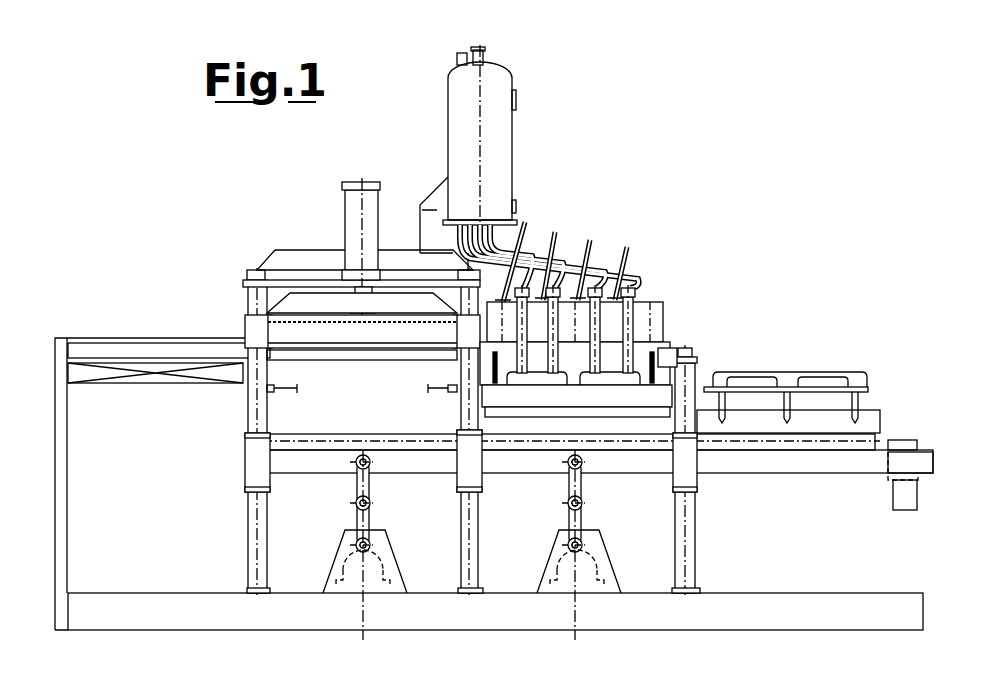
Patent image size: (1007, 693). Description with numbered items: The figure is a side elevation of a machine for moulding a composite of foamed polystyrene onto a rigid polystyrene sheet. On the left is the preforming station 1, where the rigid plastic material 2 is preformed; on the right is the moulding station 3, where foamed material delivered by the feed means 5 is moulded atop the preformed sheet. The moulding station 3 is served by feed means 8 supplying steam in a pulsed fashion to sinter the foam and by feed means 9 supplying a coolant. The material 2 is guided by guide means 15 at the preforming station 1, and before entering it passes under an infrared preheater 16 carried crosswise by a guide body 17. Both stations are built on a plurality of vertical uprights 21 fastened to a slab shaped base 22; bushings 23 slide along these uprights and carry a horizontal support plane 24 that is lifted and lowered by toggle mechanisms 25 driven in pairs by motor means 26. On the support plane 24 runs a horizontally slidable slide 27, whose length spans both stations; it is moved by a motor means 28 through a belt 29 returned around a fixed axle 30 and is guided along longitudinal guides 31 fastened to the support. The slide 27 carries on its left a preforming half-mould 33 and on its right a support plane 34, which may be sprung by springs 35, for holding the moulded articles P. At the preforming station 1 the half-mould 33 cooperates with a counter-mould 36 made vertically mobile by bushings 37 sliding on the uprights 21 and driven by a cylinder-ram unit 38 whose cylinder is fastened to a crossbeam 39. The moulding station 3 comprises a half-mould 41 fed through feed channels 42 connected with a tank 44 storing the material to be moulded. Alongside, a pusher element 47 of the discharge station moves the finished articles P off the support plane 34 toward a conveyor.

The preforming station 1 is at (226, 258).
The rigid plastic material 2 is at (292, 388).
The moulding station 3 is at (694, 332).
The feed means 5 is at (570, 240).
The steam feed means 8 is at (555, 232).
The coolant feed means 9 is at (525, 222).
The guide means 15 is at (267, 390).
The preheater 16 is at (125, 378).
The guide body 17 is at (115, 343).
The vertical uprights 21 is at (252, 545).
The slab shaped base 22 is at (330, 620).
The bushings 23 is at (250, 455).
The horizontal support plane 24 is at (540, 462).
The toggle mechanisms 25 is at (350, 511).
The motor means 26 is at (330, 565).
The slide 27 is at (628, 420).
The motor means 28 is at (903, 500).
The belt 29 is at (893, 440).
The fixed axle 30 is at (605, 427).
The longitudinal guides 31 is at (335, 440).
The preforming half-mould 33 is at (523, 398).
The support plane 34 is at (867, 388).
The springs 35 is at (780, 397).
The counter-mould 36 is at (290, 313).
The bushings 37 is at (245, 330).
The cylinder-ram unit 38 is at (338, 209).
The crossbeam 39 is at (302, 277).
The half-mould 41 is at (652, 320).
The feed channels 42 is at (633, 323).
The tank 44 is at (490, 143).
The pusher element 47 is at (722, 392).
The moulded articles P is at (823, 378).